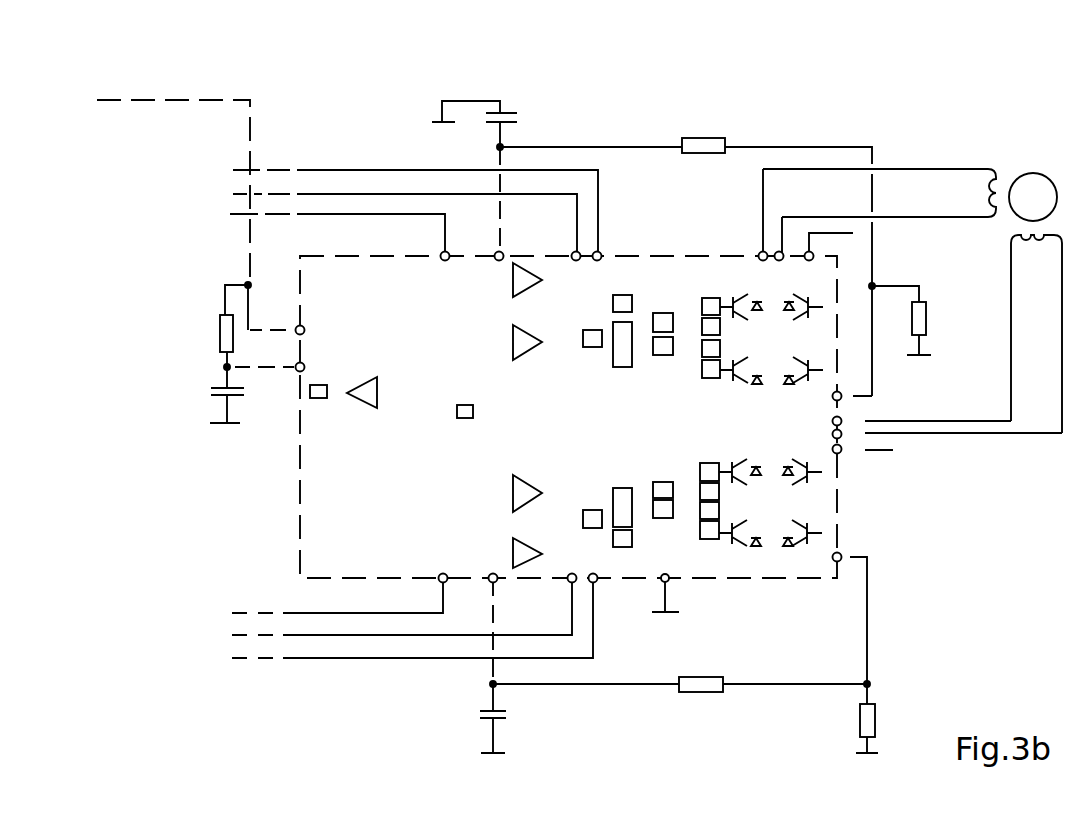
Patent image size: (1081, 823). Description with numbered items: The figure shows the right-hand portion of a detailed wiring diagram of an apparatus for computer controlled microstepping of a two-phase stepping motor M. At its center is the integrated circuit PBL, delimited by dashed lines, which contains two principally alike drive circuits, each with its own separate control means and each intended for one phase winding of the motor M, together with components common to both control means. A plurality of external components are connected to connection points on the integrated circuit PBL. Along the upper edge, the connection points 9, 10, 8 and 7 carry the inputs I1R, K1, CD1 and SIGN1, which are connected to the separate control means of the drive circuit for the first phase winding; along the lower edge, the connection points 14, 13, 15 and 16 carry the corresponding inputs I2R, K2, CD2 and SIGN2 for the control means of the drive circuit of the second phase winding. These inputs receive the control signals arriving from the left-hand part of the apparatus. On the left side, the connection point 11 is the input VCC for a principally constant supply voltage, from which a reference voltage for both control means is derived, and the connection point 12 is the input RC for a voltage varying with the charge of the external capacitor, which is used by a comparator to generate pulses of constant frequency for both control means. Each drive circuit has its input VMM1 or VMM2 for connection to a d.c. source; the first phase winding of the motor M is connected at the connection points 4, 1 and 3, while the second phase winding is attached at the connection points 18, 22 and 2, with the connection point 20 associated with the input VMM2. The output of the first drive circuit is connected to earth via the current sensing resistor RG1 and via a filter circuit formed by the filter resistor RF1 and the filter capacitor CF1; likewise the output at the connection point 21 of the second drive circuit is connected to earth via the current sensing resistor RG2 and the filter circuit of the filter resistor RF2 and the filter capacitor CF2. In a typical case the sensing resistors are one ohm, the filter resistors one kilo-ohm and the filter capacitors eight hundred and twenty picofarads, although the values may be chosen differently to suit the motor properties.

The connection point 1 is at (779, 270).
The connection point 2 is at (830, 396).
The connection point 3 is at (808, 270).
The connection point 4 is at (761, 270).
The connection point 7 is at (597, 270).
The connection point 8 is at (575, 270).
The connection point 9 is at (443, 270).
The connection point 10 is at (498, 270).
The connection point 11 is at (312, 331).
The connection point 12 is at (312, 368).
The connection point 13 is at (495, 569).
The connection point 14 is at (445, 569).
The connection point 15 is at (573, 569).
The connection point 16 is at (596, 569).
The connection point 18 is at (826, 422).
The connection point 20 is at (826, 452).
The connection point 21 is at (826, 558).
The connection point 22 is at (826, 436).
The integrated circuit PBL is at (568, 417).
The filter capacitor CF1 is at (493, 124).
The filter capacitor CF2 is at (513, 718).
The filter resistor RF1 is at (686, 254).
The filter resistor RF2 is at (680, 672).
The current sensing resistor RG1 is at (919, 320).
The current sensing resistor RG2 is at (888, 720).
The two-phase stepping motor M is at (1033, 197).
The supply voltage input VCC is at (254, 326).
The capacitor charge voltage input RC is at (252, 395).
The d.c. source input VMM1 is at (902, 241).
The d.c. source input VMM2 is at (919, 458).
The control input K1 is at (512, 201).
The control input K2 is at (477, 631).
The control input I1R is at (412, 243).
The control input I2R is at (401, 598).
The control input CD1 is at (556, 243).
The control input CD2 is at (549, 598).
The control input SIGN1 is at (627, 244).
The control input SIGN2 is at (622, 601).